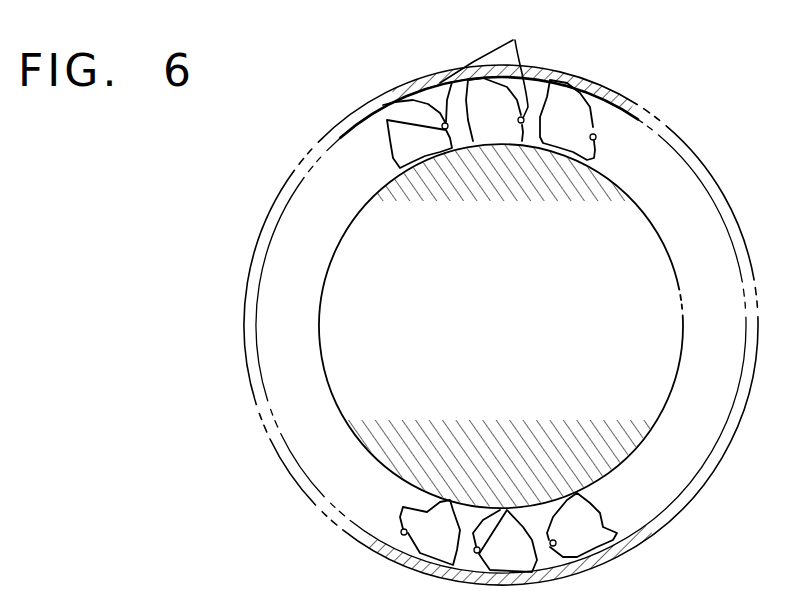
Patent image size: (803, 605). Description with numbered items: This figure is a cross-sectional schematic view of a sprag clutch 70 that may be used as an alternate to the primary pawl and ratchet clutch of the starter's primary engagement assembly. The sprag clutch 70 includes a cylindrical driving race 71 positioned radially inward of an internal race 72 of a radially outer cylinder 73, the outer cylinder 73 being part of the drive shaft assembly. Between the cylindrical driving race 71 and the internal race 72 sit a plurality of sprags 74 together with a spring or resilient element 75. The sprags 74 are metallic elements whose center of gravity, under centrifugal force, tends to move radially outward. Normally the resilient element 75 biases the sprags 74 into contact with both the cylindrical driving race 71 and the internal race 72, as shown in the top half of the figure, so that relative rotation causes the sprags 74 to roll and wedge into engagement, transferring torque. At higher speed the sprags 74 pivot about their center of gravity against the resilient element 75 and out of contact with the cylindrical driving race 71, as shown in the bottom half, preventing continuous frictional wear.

The sprag clutch 70 is at (185, 182).
The cylindrical driving race 71 is at (636, 196).
The internal race 72 is at (598, 95).
The radially outer cylinder 73 is at (620, 92).
The sprags 74 is at (418, 103).
The resilient element 75 is at (485, 63).